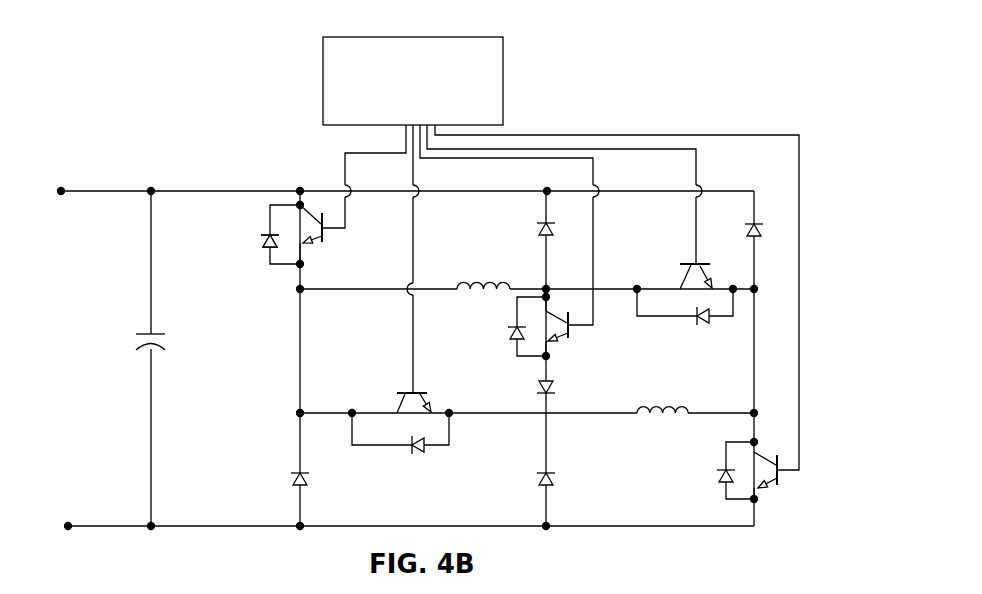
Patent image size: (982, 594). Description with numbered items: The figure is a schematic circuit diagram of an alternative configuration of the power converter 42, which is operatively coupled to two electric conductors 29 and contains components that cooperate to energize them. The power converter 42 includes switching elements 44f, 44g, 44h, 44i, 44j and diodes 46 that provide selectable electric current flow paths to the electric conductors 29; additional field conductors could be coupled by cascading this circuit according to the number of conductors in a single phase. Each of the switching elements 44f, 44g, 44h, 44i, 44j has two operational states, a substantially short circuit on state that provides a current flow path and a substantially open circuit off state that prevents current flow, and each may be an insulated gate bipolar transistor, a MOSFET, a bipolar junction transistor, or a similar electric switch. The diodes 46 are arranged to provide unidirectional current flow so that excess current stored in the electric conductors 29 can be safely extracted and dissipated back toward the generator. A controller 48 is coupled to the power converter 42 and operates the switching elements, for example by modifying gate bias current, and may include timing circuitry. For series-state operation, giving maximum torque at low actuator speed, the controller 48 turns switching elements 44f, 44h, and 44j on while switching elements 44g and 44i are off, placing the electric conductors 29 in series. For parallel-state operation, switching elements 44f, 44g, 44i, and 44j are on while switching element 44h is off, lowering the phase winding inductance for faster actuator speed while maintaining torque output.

The power converter 42 is at (105, 176).
The controller 48 is at (560, 253).
The switching element 44f is at (330, 232).
The switching element 44g is at (422, 385).
The switching element 44h is at (578, 336).
The switching element 44i is at (703, 257).
The switching element 44j is at (785, 479).
The diodes 46 is at (291, 469).
The electric conductors 29 is at (495, 272).